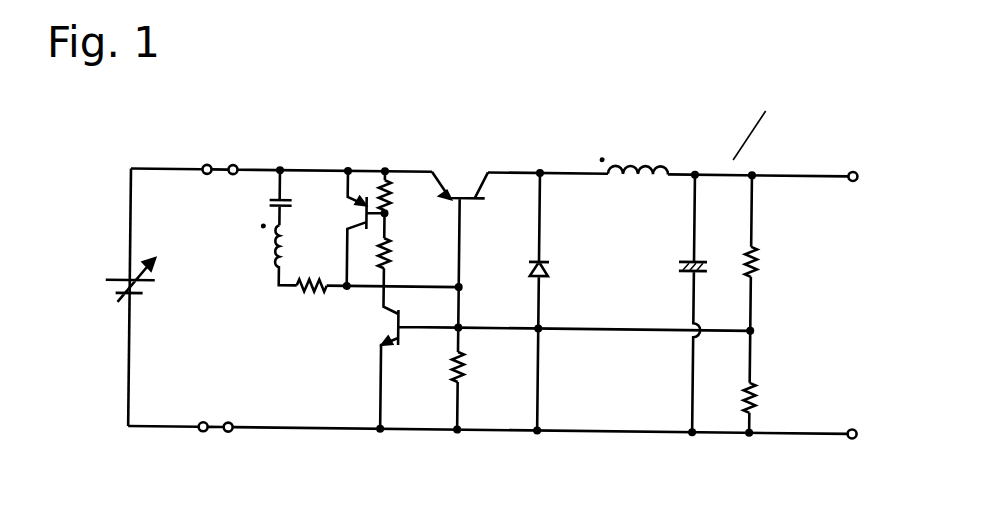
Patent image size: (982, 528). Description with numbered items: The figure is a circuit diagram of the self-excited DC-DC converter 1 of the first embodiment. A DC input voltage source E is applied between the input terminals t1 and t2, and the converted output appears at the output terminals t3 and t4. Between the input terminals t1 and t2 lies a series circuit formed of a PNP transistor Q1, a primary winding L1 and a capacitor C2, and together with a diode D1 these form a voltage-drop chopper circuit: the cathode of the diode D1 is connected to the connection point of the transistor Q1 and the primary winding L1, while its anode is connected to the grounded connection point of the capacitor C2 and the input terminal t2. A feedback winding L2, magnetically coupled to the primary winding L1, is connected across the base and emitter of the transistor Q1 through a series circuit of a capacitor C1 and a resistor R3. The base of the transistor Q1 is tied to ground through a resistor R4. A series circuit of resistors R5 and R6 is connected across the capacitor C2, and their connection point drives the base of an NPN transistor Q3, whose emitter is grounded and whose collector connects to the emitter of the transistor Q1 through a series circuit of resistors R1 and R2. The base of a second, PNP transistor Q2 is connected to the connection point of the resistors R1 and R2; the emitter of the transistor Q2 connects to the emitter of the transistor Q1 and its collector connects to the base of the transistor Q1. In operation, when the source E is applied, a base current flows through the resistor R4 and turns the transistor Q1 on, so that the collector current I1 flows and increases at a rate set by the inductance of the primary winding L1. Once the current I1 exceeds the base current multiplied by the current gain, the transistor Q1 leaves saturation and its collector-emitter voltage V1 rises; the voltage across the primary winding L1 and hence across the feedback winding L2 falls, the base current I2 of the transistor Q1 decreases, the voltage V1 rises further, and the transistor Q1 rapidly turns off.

The self-excited DC-DC converter 1 is at (781, 111).
The DC input voltage source E is at (113, 284).
The input terminal t1 is at (220, 150).
The input terminal t2 is at (221, 446).
The output terminal t3 is at (869, 158).
The output terminal t4 is at (861, 454).
The capacitor C1 is at (260, 198).
The feedback winding L2 is at (255, 254).
The resistor R3 is at (318, 304).
The PNP transistor Q2 is at (343, 228).
The resistor R1 is at (402, 194).
The resistor R2 is at (406, 250).
The NPN transistor Q3 is at (394, 358).
The PNP transistor Q1 is at (459, 215).
The resistor R4 is at (482, 358).
The diode D1 is at (559, 302).
The primary winding L1 is at (633, 148).
The capacitor C2 is at (667, 303).
The resistor R5 is at (772, 253).
The resistor R6 is at (771, 382).
The collector-emitter voltage V1 is at (493, 132).
The collector current I1 is at (543, 159).
The base current I2 is at (418, 175).